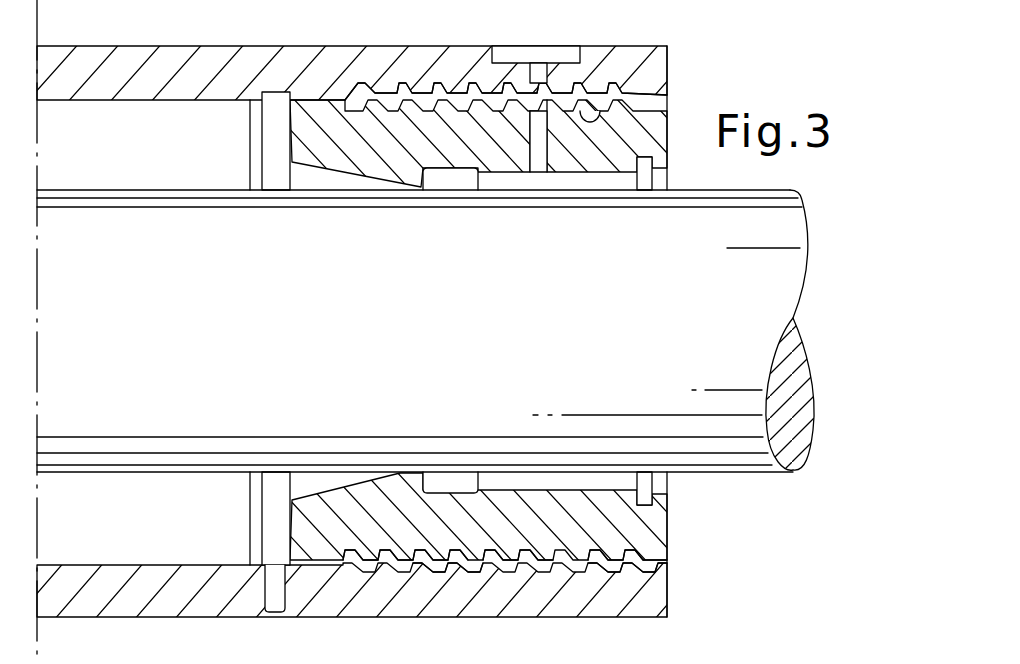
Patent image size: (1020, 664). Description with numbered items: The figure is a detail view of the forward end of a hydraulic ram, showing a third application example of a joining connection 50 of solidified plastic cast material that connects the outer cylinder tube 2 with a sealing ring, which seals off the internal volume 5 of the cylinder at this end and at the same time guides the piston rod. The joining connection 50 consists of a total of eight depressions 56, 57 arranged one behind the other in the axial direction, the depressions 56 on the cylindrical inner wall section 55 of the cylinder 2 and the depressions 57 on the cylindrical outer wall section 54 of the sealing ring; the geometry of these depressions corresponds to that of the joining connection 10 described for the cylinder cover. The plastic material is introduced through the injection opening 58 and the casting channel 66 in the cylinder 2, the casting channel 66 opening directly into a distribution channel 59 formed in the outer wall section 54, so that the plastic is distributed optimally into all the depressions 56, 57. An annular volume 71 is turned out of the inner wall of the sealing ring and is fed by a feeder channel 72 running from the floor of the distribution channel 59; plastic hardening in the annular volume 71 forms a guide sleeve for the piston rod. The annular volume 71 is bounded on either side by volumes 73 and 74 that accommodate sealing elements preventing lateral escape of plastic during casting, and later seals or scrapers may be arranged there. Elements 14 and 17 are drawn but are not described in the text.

The outer cylinder tube 2 is at (133, 50).
The internal volume 5 is at (176, 155).
The first joining connection 10 is at (471, 282).
The pin 14 is at (254, 0).
The toothed engagement 17 is at (506, 50).
The third joining connection 50 is at (455, 585).
The cylindrical outer wall section 54 is at (642, 568).
The cylindrical inner wall section 55 is at (630, 558).
The depressions 56 is at (528, 566).
The depressions 57 is at (422, 560).
The injection opening 58 is at (553, 62).
The distribution channel 59 is at (593, 134).
The casting channel 66 is at (538, 74).
The annular volume 71 is at (589, 181).
The feeder channel 72 is at (537, 152).
The volume for accommodation of sealing elements 73 is at (443, 182).
The volume for accommodation of sealing elements 74 is at (643, 183).